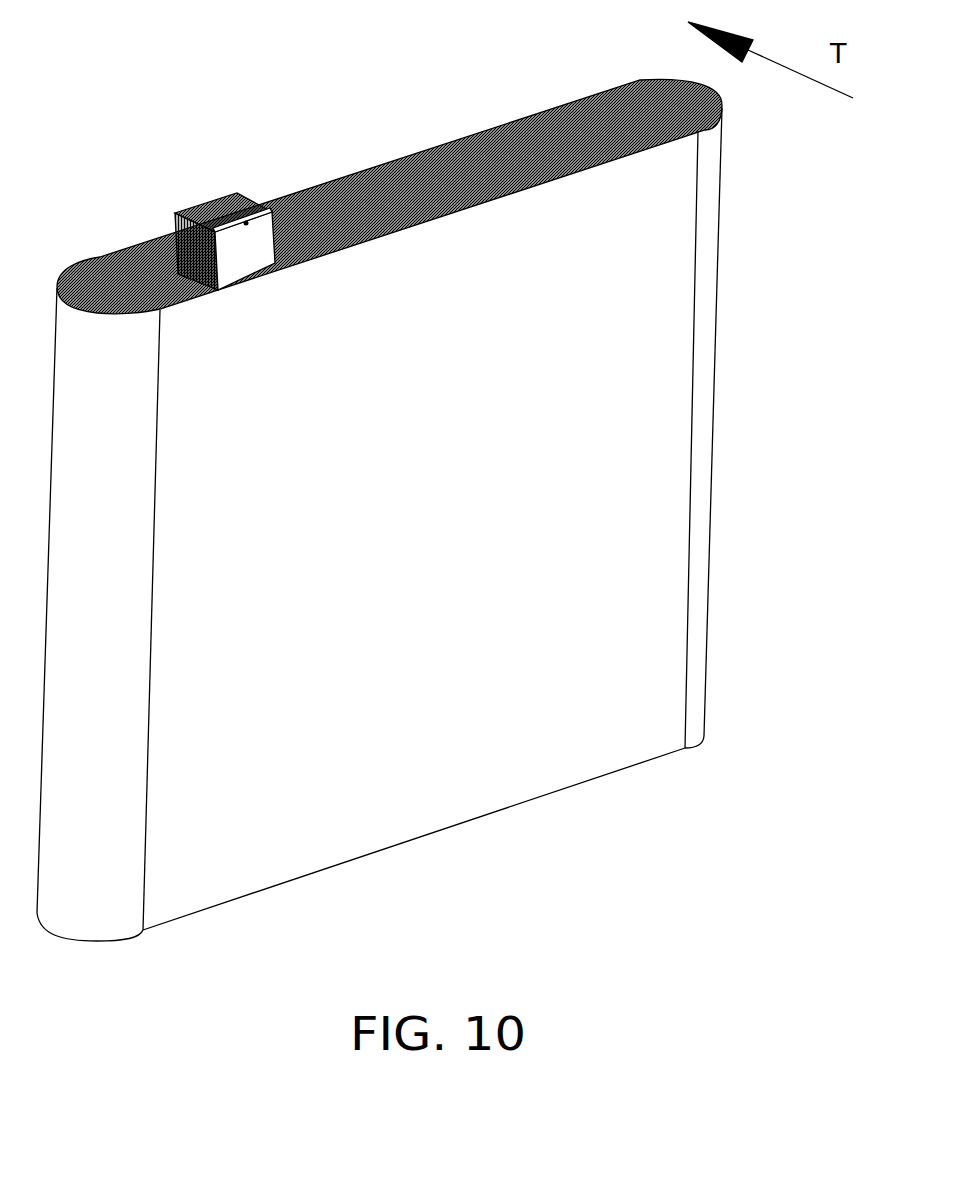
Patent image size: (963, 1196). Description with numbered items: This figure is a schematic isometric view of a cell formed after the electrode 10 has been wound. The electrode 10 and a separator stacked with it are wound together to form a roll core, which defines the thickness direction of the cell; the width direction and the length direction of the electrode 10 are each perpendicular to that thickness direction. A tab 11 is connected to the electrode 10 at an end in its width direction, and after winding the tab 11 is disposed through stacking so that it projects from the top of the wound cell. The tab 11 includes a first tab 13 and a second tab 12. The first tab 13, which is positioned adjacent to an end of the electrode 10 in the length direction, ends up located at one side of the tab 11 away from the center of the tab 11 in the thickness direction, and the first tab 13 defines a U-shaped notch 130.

The electrode 10 is at (672, 285).
The tab 11 is at (152, 5).
The second tab 12 is at (158, 243).
The first tab 13 is at (198, 205).
The U-shaped notch 130 is at (245, 222).